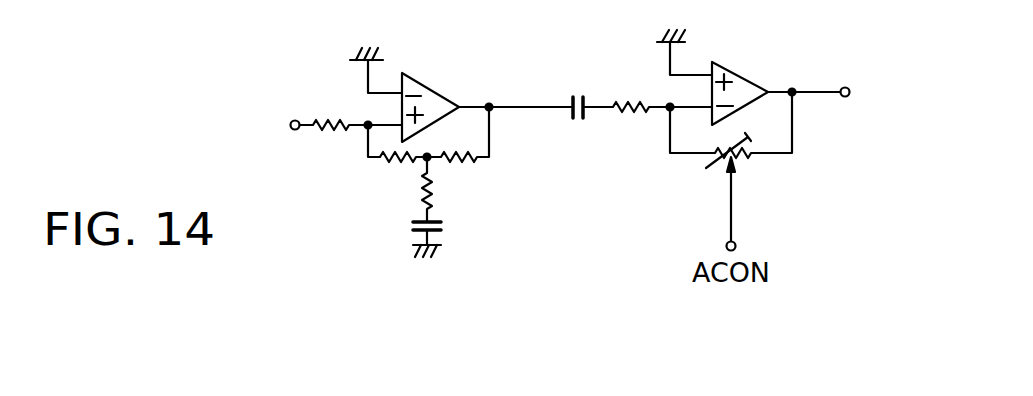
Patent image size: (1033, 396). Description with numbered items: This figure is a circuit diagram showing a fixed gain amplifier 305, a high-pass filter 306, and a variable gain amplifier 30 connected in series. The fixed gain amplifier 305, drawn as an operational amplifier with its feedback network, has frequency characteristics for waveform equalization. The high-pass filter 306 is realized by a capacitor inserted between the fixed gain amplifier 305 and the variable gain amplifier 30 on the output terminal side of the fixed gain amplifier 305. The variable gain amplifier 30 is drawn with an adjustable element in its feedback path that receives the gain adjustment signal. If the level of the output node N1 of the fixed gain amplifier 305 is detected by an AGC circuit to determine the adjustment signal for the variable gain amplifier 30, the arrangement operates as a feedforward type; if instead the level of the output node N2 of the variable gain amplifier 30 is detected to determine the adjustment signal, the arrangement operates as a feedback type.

The fixed gain amplifier 305 is at (428, 87).
The high-pass filter 306 is at (580, 122).
The variable gain amplifier 30 is at (737, 66).
The output node of the fixed gain amplifier N1 is at (518, 103).
The output node of the variable gain amplifier N2 is at (817, 90).